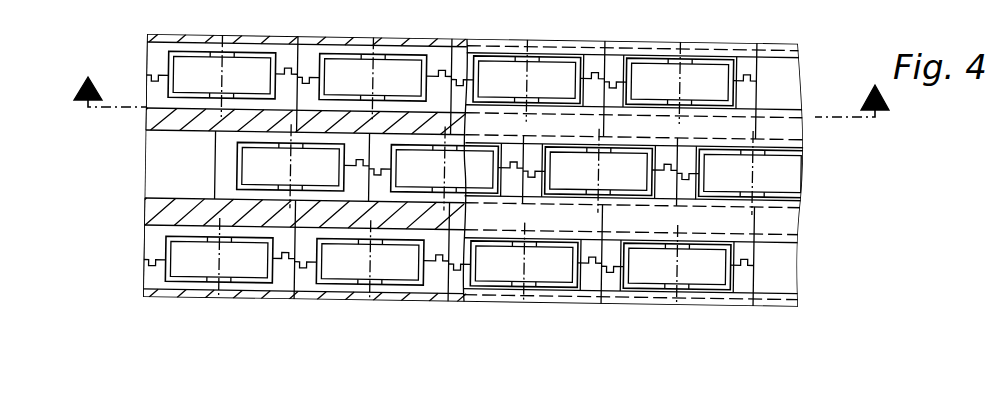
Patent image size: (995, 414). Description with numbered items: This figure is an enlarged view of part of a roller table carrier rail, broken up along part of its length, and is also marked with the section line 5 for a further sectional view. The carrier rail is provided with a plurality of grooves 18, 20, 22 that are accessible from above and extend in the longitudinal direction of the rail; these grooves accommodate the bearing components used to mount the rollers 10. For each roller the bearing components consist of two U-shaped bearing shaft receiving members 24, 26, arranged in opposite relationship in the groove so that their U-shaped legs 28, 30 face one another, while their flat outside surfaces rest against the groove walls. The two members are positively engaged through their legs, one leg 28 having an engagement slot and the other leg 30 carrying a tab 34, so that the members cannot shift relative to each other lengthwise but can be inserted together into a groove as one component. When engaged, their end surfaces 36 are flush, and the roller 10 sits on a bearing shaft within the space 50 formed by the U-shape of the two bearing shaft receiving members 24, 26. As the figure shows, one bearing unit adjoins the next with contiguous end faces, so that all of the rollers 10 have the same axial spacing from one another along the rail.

The section line 5- 5 is at (481, 115).
The roller 10 is at (200, 78).
The groove 18 is at (207, 42).
The groove 20 is at (163, 131).
The groove 22 is at (164, 288).
The bearing shaft receiving member 24 is at (140, 45).
The bearing shaft receiving member 26 is at (140, 86).
The U-shaped leg 28 is at (288, 243).
The U-shaped leg 30 is at (156, 236).
The tab 34 is at (305, 67).
The end surface 36 is at (147, 62).
The space 50 is at (258, 62).